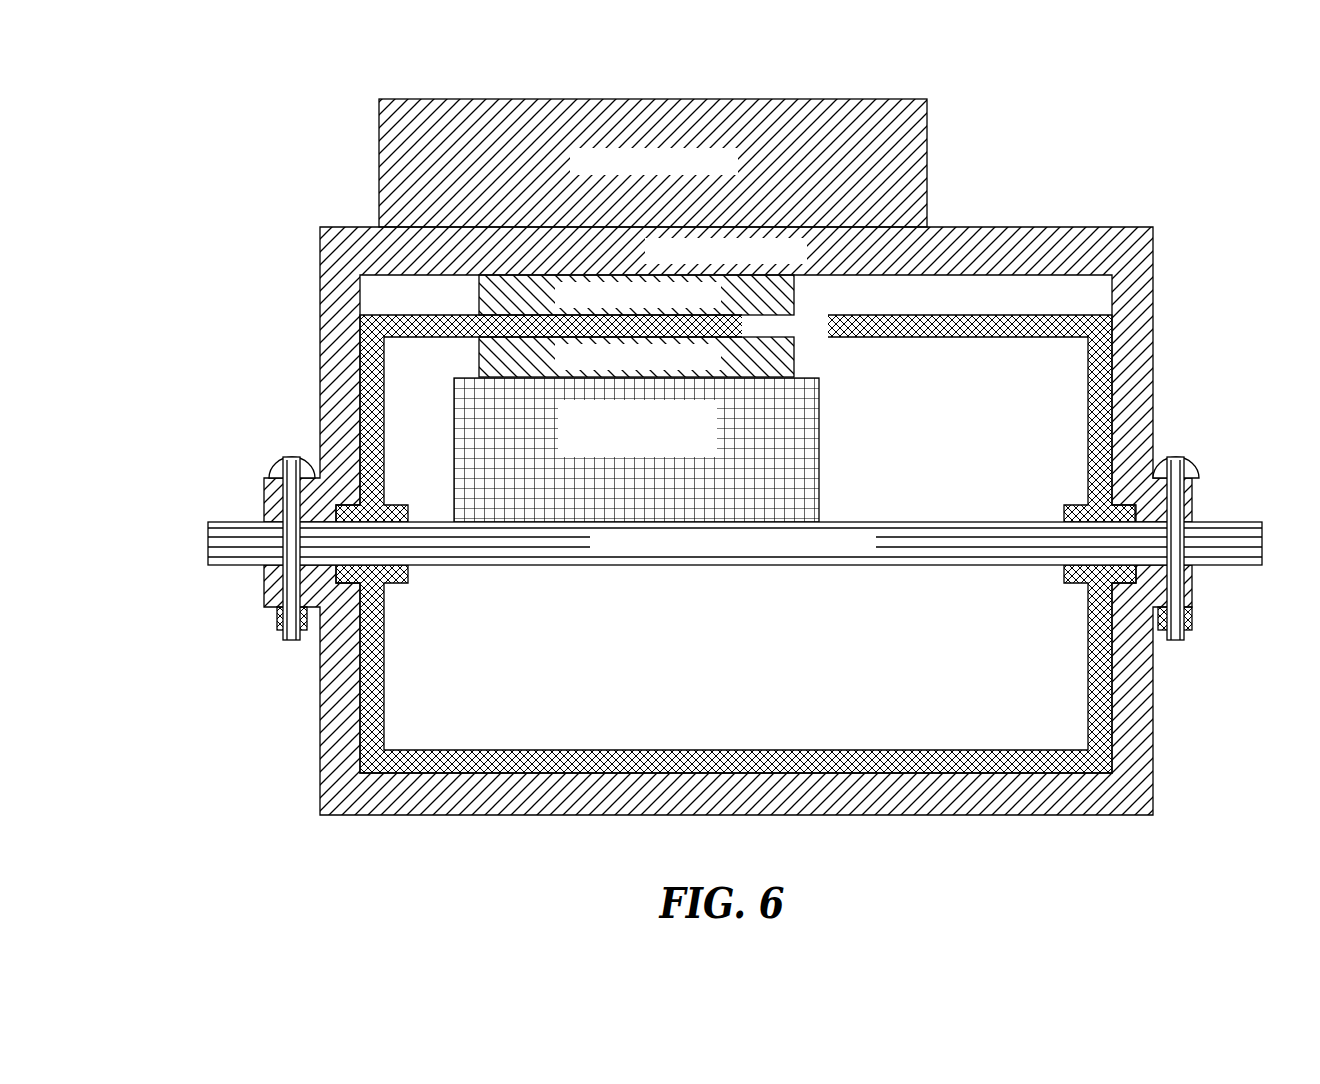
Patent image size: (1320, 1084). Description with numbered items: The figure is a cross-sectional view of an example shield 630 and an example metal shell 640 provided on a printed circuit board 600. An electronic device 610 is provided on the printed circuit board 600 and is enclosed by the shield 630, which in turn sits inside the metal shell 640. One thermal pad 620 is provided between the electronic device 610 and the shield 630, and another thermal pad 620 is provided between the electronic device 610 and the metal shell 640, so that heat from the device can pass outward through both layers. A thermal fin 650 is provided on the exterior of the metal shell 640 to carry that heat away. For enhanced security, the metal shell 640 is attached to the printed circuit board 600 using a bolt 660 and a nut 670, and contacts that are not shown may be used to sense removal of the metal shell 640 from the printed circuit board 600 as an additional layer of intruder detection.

The printed circuit board 600 is at (208, 543).
The electronic device 610 is at (454, 428).
The thermal pad 620 is at (479, 297).
The shield 630 is at (1088, 457).
The metal shell 640 is at (320, 390).
The thermal fin 650 is at (378, 152).
The bolt 660 is at (275, 470).
The nut 670 is at (277, 627).